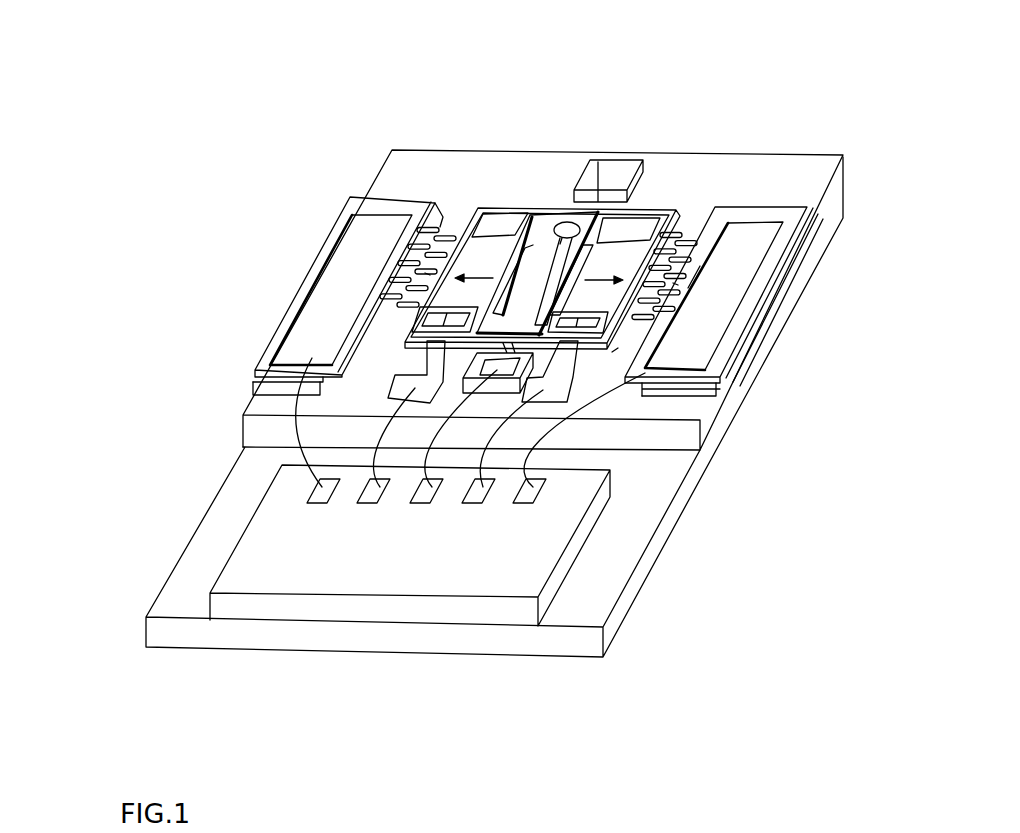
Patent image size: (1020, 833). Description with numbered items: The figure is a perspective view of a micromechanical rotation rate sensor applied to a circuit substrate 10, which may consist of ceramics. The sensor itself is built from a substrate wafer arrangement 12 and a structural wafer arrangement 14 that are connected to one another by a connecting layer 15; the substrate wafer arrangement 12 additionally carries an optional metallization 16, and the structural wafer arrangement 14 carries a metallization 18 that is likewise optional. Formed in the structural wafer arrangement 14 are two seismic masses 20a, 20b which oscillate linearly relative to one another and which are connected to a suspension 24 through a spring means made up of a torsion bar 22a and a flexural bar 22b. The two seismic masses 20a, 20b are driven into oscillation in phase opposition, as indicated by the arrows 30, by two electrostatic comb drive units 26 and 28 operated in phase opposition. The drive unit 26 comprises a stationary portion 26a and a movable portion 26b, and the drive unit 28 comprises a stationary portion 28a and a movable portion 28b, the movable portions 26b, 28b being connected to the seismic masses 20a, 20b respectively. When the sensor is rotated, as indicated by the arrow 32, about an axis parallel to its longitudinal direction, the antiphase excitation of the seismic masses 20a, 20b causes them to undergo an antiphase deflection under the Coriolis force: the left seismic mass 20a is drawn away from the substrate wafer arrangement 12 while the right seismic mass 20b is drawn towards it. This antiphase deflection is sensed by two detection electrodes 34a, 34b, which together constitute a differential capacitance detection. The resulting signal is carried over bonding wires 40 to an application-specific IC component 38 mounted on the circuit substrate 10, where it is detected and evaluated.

The circuit substrate 10 is at (733, 423).
The substrate wafer arrangement 12 is at (708, 422).
The structural wafer arrangement 14 is at (730, 362).
The connecting layer 15 is at (703, 392).
The metallization 16 is at (713, 397).
The metallization 18 is at (285, 353).
The seismic mass 20a is at (525, 310).
The seismic mass 20b is at (612, 258).
The torsion bar 22a is at (540, 240).
The flexural bar 22b is at (523, 222).
The suspension 24 is at (634, 166).
The electrostatic drive unit 26 is at (442, 220).
The stationary portion 26a is at (440, 238).
The movable portion 26b is at (425, 273).
The electrostatic drive unit 28 is at (630, 268).
The stationary portion 28a is at (673, 283).
The movable portion 28b is at (612, 352).
The arrows 30 is at (690, 287).
The arrow 32 is at (580, 226).
The detection electrode 34a is at (417, 363).
The detection electrode 34b is at (573, 393).
The application-specific IC component 38 is at (257, 557).
The bonding wires 40 is at (322, 462).